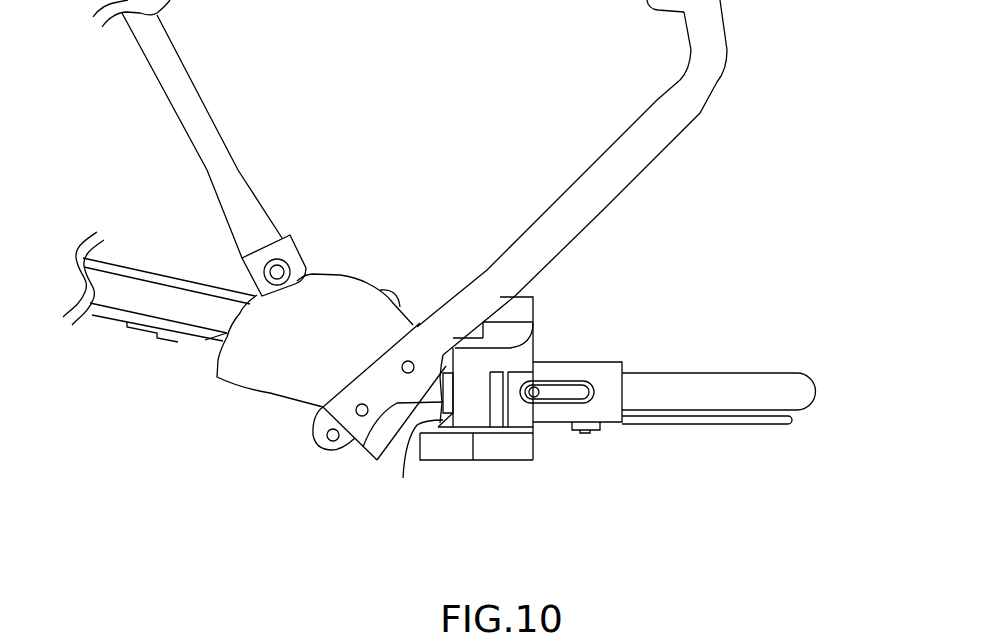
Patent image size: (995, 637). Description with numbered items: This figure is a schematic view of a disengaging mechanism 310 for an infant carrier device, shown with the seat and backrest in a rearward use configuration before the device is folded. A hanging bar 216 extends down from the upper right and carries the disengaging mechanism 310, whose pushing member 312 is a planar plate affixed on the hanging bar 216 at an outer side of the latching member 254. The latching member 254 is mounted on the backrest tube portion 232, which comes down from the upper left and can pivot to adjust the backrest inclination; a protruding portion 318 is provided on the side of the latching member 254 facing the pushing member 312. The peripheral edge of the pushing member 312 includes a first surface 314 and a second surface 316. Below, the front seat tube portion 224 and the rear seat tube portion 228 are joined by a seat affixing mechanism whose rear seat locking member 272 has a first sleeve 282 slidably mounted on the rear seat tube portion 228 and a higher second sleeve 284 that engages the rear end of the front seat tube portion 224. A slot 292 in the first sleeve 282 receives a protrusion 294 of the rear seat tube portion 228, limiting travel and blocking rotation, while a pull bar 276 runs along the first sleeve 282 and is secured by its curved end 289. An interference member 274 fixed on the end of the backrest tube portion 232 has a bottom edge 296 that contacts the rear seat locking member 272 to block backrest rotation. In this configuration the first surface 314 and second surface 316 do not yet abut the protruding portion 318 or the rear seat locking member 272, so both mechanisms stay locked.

The hanging bar 216 is at (660, 127).
The front seat tube portion 224 is at (167, 322).
The rear seat tube portion 228 is at (746, 383).
The backrest tube portion 232 is at (207, 118).
The latching member 254 is at (241, 262).
The rear seat locking member 272 is at (497, 447).
The interference member 274 is at (403, 468).
The pull bar 276 is at (730, 417).
The first sleeve 282 is at (604, 362).
The second sleeve 284 is at (518, 296).
The curved end 289 is at (582, 433).
The slot 292 is at (557, 381).
The protrusion 294 is at (533, 403).
The bottom edge 296 is at (440, 430).
The disengaging mechanism 310 is at (343, 257).
The pushing member 312 is at (378, 308).
The first surface 314 is at (227, 333).
The second surface 316 is at (372, 460).
The protruding portion 318 is at (280, 258).